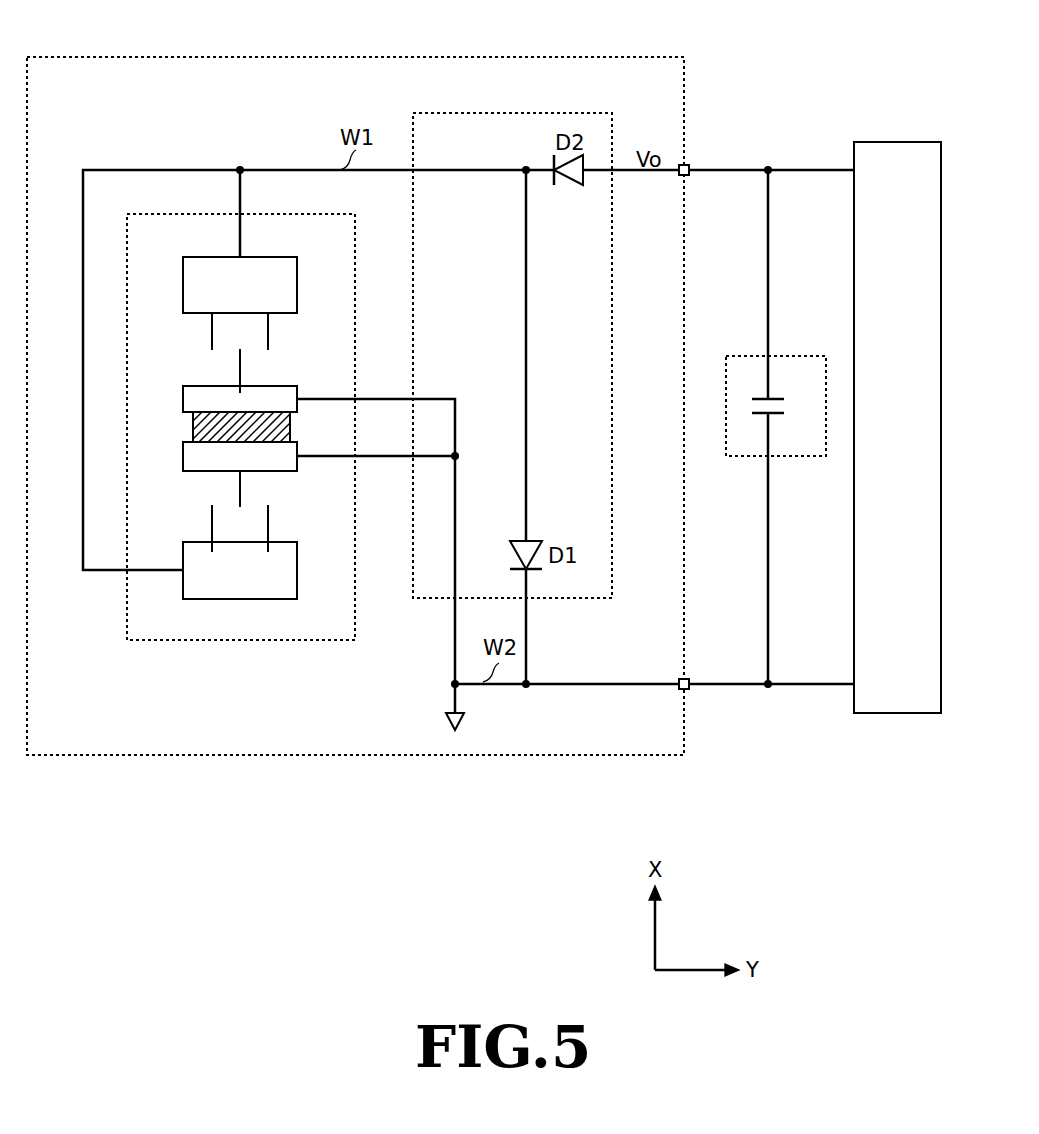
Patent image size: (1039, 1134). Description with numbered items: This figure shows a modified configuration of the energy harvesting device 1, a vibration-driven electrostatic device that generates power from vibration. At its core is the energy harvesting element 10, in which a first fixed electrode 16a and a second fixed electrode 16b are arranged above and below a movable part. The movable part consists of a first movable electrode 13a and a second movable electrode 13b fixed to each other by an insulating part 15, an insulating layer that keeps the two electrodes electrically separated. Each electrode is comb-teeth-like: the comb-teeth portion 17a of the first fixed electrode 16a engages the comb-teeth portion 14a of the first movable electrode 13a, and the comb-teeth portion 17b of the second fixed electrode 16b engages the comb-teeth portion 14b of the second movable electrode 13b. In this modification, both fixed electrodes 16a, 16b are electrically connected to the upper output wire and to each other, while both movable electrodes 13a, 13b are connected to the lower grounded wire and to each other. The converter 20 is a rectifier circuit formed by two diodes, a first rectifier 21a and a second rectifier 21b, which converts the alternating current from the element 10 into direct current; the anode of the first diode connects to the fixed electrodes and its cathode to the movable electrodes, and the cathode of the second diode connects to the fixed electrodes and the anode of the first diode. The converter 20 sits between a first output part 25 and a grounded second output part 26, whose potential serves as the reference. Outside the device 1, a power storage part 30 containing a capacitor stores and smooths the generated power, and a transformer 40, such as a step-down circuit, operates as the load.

The energy harvesting device 1 is at (613, 57).
The energy harvesting element 10 is at (355, 268).
The first movable electrode 13a is at (183, 399).
The second movable electrode 13b is at (183, 456).
The comb-teeth portion 14a is at (296, 342).
The comb-teeth portion 14b is at (296, 475).
The insulating part 15 is at (293, 430).
The first fixed electrode 16a is at (255, 257).
The second fixed electrode 16b is at (253, 599).
The comb-teeth portion 17a is at (186, 317).
The comb-teeth portion 17b is at (186, 498).
The converter 20 is at (539, 113).
The first rectifier 21a is at (535, 533).
The second rectifier 21b is at (567, 188).
The first output part 25 is at (692, 162).
The second output part 26 is at (692, 678).
The power storage part 30 is at (795, 356).
The transformer 40 is at (906, 142).